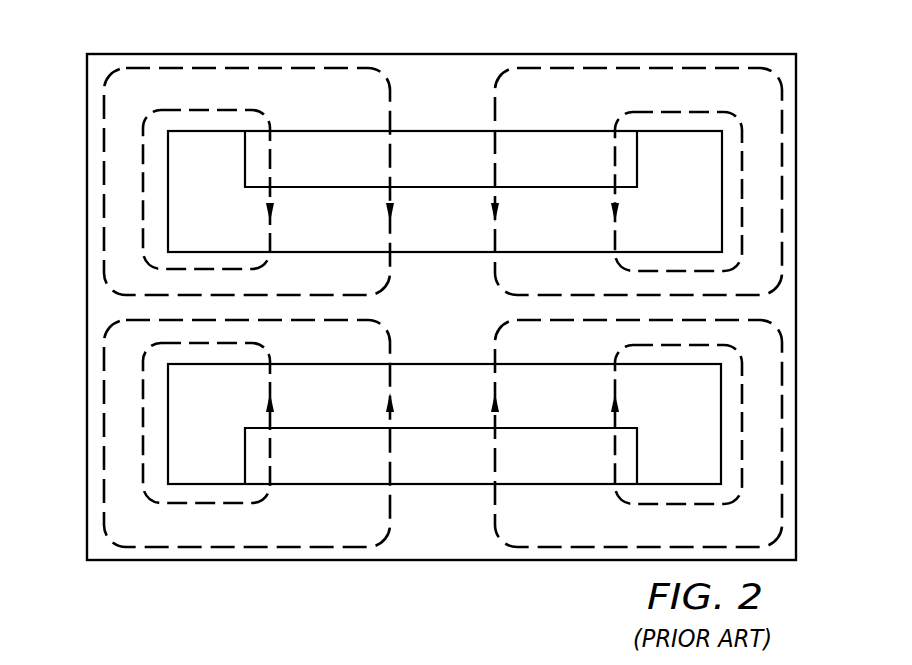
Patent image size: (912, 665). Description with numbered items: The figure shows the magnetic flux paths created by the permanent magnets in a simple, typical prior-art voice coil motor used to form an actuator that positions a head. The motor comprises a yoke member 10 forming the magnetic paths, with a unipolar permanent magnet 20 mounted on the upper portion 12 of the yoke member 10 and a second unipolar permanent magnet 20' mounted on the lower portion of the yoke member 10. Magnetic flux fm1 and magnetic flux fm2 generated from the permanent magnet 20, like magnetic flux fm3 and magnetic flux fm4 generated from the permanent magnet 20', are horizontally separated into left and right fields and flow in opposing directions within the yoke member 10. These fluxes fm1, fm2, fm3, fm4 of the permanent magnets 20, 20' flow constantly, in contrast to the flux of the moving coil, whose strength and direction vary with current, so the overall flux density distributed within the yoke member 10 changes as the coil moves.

The yoke member 10 is at (446, 280).
The upper portion of the yoke member 12 is at (430, 67).
The unipolar permanent magnet 20 is at (517, 191).
The unipolar permanent magnet 20' is at (519, 425).
The magnetic flux fm1 is at (143, 142).
The magnetic flux fm2 is at (742, 138).
The magnetic flux fm3 is at (147, 489).
The magnetic flux fm4 is at (780, 490).